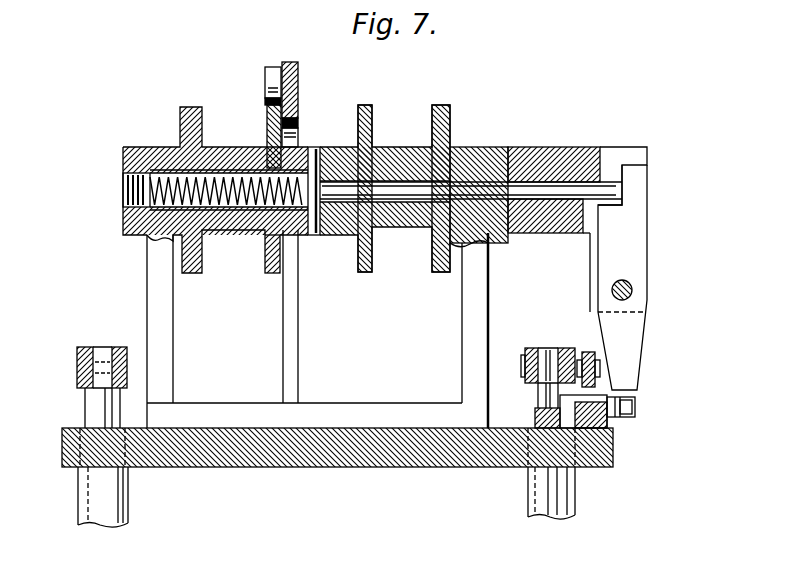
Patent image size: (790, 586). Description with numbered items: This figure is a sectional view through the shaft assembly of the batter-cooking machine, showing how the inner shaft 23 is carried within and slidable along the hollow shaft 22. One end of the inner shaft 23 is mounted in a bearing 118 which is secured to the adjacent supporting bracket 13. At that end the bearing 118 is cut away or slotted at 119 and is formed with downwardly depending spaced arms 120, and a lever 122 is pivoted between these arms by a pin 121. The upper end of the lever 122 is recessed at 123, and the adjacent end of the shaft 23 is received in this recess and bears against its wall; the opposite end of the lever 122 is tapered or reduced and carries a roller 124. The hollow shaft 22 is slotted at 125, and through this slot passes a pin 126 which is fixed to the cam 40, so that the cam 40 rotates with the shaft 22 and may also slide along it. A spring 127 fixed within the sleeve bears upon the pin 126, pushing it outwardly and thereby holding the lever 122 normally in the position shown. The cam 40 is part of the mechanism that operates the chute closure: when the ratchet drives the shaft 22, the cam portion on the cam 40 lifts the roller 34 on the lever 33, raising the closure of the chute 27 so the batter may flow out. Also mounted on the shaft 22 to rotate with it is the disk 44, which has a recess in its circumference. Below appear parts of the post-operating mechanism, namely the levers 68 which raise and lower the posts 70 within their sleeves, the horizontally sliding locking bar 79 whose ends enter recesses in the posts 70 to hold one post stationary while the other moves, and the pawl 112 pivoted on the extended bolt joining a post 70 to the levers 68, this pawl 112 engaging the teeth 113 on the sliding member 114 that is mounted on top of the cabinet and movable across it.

The supporting bracket 13 is at (485, 323).
The hollow shaft 22 is at (465, 160).
The inner shaft 23 is at (484, 182).
The chute 27 is at (362, 272).
The lever 33 is at (298, 86).
The roller 34 is at (272, 67).
The cam 40 is at (267, 116).
The disk 44 is at (440, 272).
The levers 68 is at (531, 348).
The post 70 is at (540, 398).
The locking bar 79 is at (537, 415).
The pawl 112 is at (589, 352).
The teeth 113 is at (636, 409).
The sliding member 114 is at (613, 437).
The bearing 118 is at (565, 160).
The slot 119 is at (632, 153).
The spaced arms 120 is at (594, 266).
The pin 121 is at (633, 290).
The lever 122 is at (628, 258).
The recess 123 is at (618, 203).
The roller 124 is at (636, 398).
The slot 125 is at (297, 210).
The pin 126 is at (314, 150).
The spring 127 is at (152, 210).